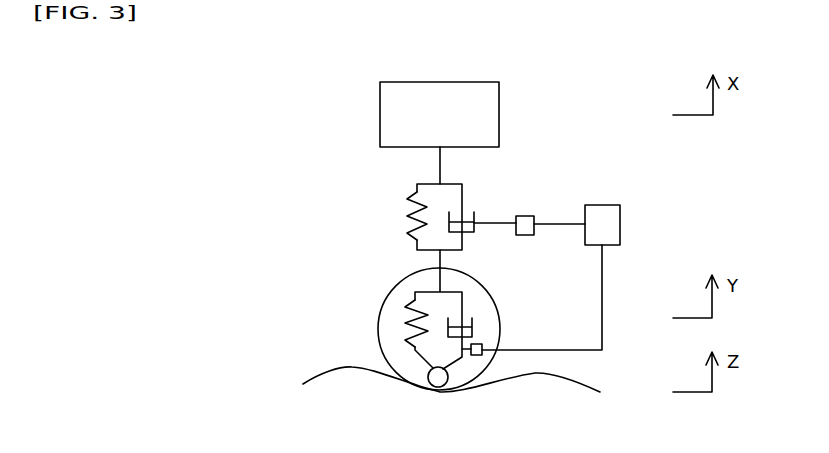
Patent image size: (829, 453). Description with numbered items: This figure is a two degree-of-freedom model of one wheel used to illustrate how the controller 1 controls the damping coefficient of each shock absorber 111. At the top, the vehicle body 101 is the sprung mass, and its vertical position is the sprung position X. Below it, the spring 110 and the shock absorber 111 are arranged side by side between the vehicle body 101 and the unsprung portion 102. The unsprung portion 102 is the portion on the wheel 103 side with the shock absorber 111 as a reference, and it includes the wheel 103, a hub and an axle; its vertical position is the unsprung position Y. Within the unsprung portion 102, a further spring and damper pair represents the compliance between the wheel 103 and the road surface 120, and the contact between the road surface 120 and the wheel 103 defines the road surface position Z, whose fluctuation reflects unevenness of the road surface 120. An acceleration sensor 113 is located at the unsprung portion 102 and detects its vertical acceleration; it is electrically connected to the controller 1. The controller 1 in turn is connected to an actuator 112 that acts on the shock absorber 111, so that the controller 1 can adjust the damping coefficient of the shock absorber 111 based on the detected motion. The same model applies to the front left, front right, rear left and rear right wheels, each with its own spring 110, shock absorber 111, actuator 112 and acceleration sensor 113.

The controller 1 is at (614, 222).
The vehicle body 101 is at (418, 92).
The unsprung portion 102 is at (355, 335).
The wheel 103 is at (396, 300).
The spring 110 is at (411, 211).
The shock absorber 111 is at (462, 217).
The actuator 112 is at (534, 216).
The acceleration sensor 113 is at (483, 356).
The road surface 120 is at (341, 367).